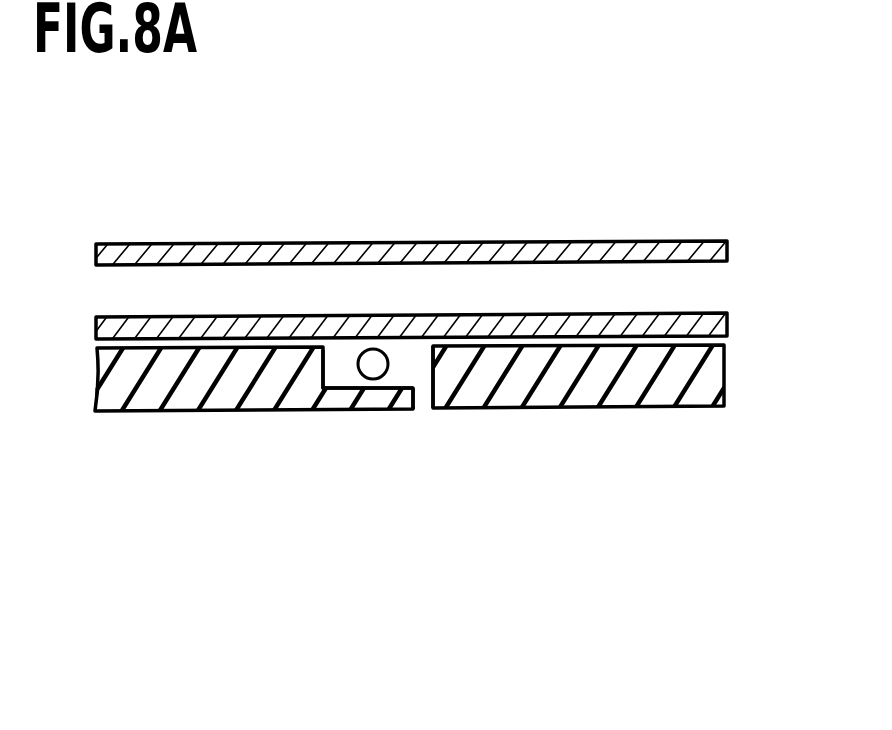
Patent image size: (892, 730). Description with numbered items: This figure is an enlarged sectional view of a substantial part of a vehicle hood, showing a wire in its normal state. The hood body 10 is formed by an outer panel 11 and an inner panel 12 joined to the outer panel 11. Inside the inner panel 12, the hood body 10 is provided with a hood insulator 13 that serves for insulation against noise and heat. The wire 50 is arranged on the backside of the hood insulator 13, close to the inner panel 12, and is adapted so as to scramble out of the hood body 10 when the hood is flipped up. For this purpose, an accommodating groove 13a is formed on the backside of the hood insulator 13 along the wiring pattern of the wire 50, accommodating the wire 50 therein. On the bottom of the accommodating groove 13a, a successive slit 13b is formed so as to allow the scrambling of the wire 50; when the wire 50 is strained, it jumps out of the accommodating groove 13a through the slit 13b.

The hood body 10 is at (817, 112).
The outer panel 11 is at (556, 246).
The inner panel 12 is at (652, 318).
The hood insulator 13 is at (712, 383).
The accommodating groove 13a is at (326, 390).
The slit 13b is at (423, 393).
The wire 50 is at (372, 370).